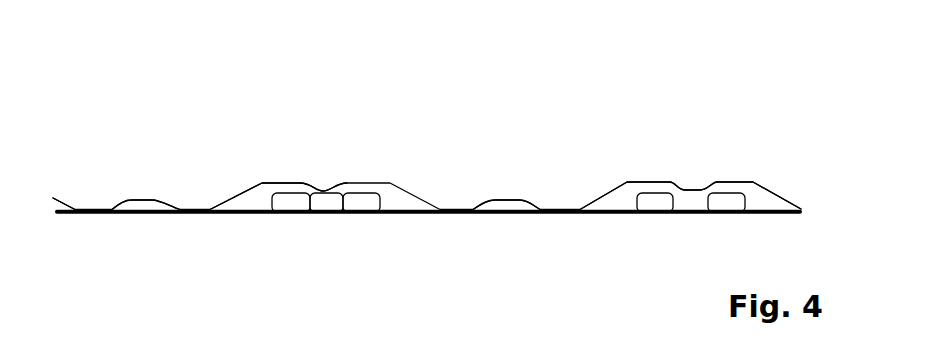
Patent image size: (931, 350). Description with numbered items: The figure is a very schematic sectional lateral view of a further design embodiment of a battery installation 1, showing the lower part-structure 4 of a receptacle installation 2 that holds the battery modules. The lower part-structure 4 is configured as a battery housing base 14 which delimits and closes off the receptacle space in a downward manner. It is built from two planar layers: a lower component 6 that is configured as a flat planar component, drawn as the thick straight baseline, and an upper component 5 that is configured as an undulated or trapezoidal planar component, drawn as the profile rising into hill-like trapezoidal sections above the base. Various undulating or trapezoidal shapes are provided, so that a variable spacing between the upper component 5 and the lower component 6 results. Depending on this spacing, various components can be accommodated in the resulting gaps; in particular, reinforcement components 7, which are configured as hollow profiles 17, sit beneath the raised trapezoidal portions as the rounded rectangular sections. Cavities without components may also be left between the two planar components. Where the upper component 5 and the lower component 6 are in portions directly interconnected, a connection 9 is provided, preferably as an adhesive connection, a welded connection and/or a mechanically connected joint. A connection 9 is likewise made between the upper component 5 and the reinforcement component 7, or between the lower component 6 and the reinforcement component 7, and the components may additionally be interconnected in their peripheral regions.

The sole structure 1 is at (228, 84).
The receptacle installation 2 is at (664, 138).
The lower part-structure 4 is at (83, 150).
The upper component 5 is at (280, 181).
The lower component 6 is at (242, 215).
The reinforcement component 7 is at (269, 221).
The connection 9 is at (322, 183).
The battery housing base 14 is at (133, 192).
The hollow profile 17 is at (331, 215).